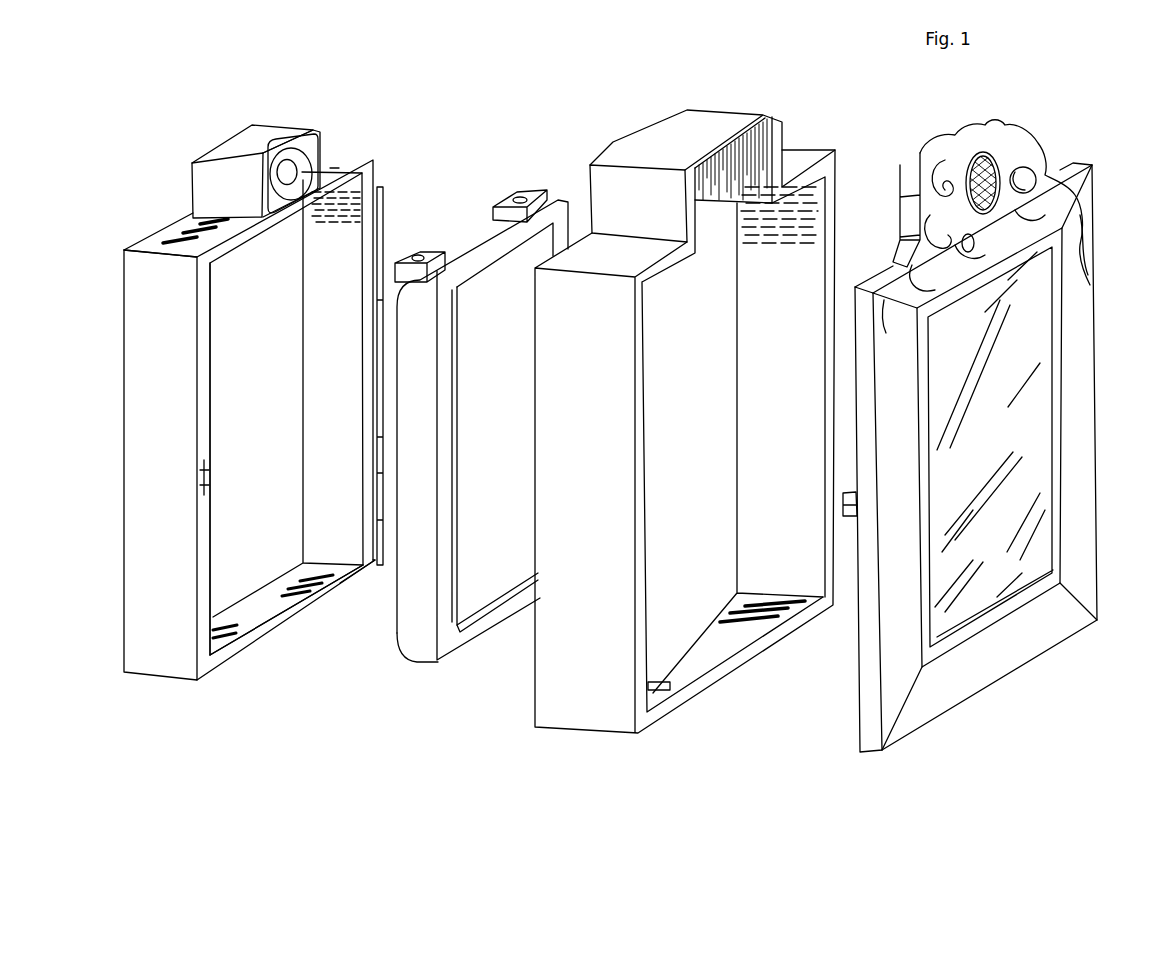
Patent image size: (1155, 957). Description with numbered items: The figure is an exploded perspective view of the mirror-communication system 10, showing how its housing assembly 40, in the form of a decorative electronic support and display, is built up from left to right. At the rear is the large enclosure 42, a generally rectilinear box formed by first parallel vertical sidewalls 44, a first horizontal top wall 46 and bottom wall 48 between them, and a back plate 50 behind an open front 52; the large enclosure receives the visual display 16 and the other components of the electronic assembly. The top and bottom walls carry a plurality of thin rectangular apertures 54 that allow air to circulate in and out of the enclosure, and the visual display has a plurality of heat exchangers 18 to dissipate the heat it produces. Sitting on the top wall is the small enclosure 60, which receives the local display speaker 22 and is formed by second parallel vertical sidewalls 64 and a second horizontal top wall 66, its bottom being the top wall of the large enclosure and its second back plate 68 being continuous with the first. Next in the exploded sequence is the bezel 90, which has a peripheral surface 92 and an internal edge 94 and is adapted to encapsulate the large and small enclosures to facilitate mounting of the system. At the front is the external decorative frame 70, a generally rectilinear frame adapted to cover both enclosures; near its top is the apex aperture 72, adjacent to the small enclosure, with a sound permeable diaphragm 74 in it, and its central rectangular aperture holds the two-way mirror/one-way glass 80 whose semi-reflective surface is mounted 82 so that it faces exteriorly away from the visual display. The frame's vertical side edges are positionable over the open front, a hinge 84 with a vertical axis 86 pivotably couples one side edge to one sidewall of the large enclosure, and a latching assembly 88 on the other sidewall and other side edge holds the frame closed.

The mirror-communication system 10 is at (122, 218).
The visual display 16 is at (418, 627).
The heat exchangers 18 is at (520, 197).
The local display speaker 22 is at (308, 167).
The housing assembly 40 is at (208, 145).
The large enclosure 42 is at (213, 663).
The first parallel vertical sidewalls 44 is at (210, 446).
The first parallel horizontal top wall 46 is at (370, 161).
The bottom wall 48 is at (275, 627).
The back plate 50 is at (232, 365).
The open front 52 is at (336, 535).
The thin rectangular apertures 54 is at (188, 224).
The small enclosure 60 is at (284, 123).
The second parallel vertical sidewalls 64 is at (314, 146).
The second horizontal top wall 66 is at (307, 118).
The second back plate 68 is at (222, 130).
The external decorative frame 70 is at (940, 148).
The apex aperture 72 is at (985, 152).
The sound permeable diaphragm 74 is at (1017, 130).
The two-way mirror/one-way glass 80 is at (1027, 577).
The semi-reflective surface mounted in the aperture 82 is at (1033, 292).
The hinge 84 is at (385, 198).
The vertical axis 86 is at (377, 565).
The latching assembly 88 is at (212, 472).
The bezel 90 is at (730, 123).
The peripheral surface 92 is at (552, 682).
The internal edge 94 is at (537, 625).